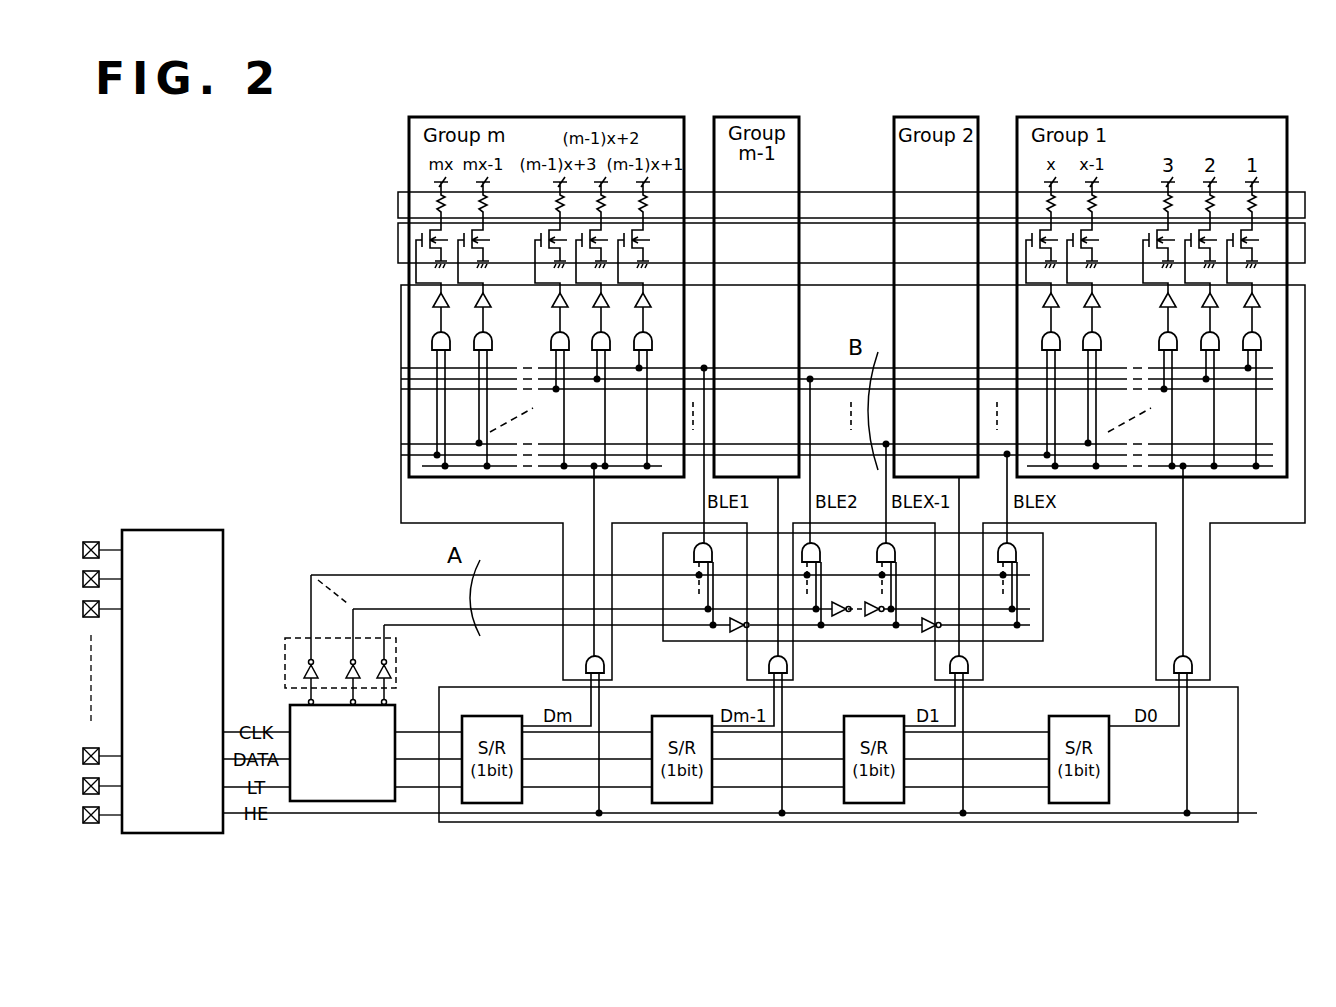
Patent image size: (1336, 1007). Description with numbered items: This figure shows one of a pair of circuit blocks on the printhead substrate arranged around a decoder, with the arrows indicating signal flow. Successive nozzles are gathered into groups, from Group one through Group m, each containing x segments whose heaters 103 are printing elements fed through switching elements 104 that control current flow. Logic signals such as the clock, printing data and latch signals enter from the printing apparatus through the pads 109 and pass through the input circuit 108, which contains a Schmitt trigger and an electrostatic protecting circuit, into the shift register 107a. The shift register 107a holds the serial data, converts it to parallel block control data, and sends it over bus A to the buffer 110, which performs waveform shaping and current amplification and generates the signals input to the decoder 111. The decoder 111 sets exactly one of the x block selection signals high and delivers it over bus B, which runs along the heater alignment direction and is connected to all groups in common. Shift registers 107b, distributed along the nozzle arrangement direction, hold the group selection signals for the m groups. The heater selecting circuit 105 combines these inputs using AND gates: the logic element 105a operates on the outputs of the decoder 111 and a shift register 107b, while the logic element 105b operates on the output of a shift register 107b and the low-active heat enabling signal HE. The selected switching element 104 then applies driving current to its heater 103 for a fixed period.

The heater 103 is at (397, 205).
The switching element 104 is at (397, 247).
The heater selecting circuit 105 is at (397, 312).
The logic element 105a is at (1123, 335).
The logic element 105b is at (1193, 663).
The shift register 107a is at (343, 802).
The shift register 107b is at (500, 822).
The input circuit 108 is at (172, 530).
The pad 109 is at (92, 534).
The buffer 110 is at (293, 635).
The decoder 111 is at (1043, 592).